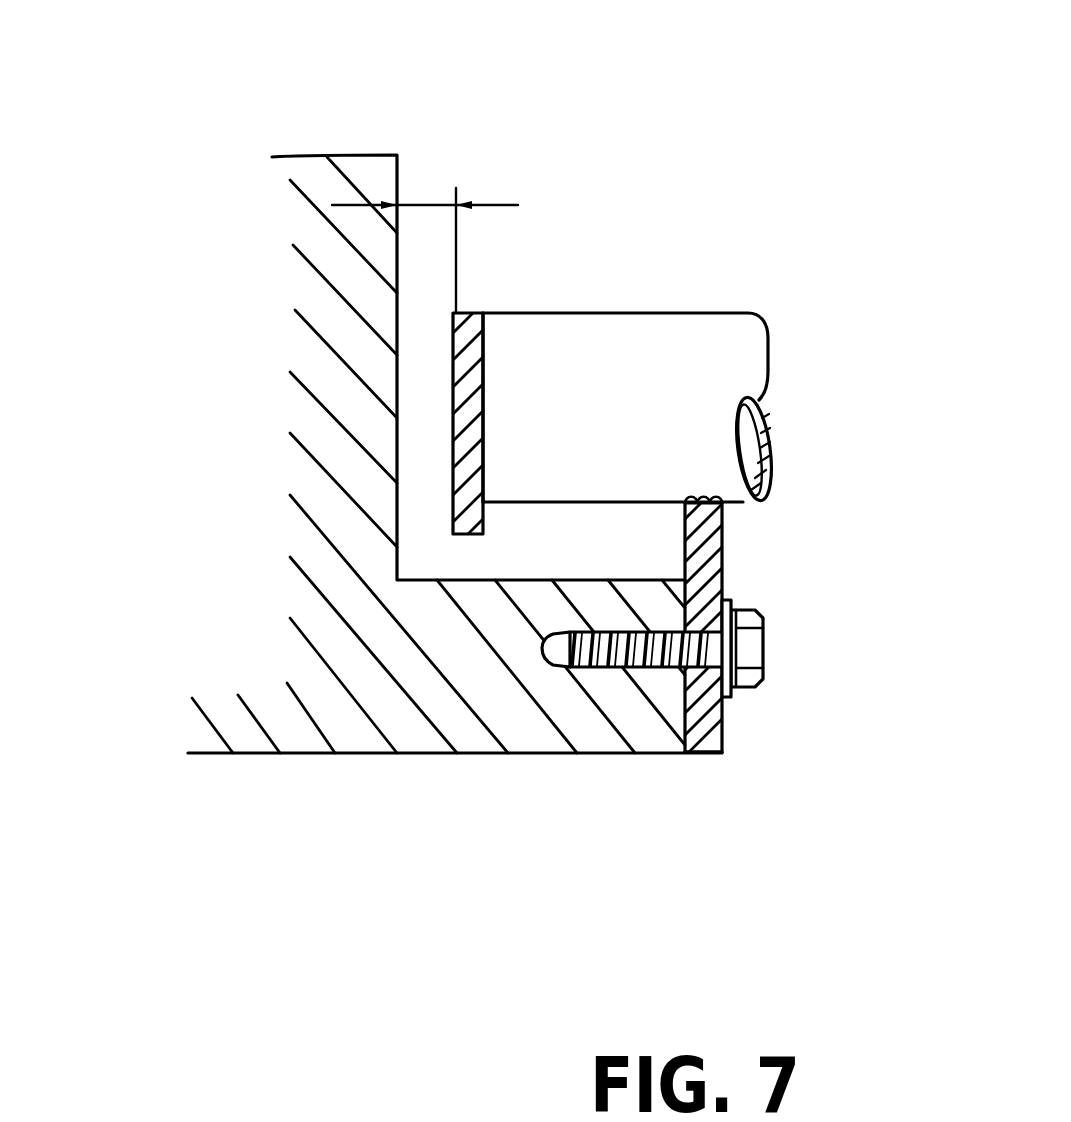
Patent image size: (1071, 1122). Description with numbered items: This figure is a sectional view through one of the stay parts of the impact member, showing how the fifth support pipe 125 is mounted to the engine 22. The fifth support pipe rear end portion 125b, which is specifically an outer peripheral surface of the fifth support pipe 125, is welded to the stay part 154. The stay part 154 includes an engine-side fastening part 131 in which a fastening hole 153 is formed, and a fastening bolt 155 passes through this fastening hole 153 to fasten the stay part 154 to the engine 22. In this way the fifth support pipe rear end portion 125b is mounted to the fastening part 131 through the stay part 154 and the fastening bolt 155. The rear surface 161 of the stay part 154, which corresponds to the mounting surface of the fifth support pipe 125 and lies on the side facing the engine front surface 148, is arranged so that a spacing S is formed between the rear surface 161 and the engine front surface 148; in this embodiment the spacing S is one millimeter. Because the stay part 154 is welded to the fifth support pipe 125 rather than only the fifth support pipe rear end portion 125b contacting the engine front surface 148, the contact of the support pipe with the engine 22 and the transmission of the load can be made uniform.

The engine 22 is at (243, 728).
The engine front surface 148 is at (398, 178).
The rear surface 161 is at (453, 413).
The fifth support pipe 125 is at (668, 368).
The fifth support pipe rear end portion 125b is at (495, 357).
The fastening part 131 is at (722, 576).
The fastening bolt 155 is at (763, 652).
The fastening hole 153 is at (712, 670).
The stay part 154 is at (712, 757).
The spacing S is at (427, 237).